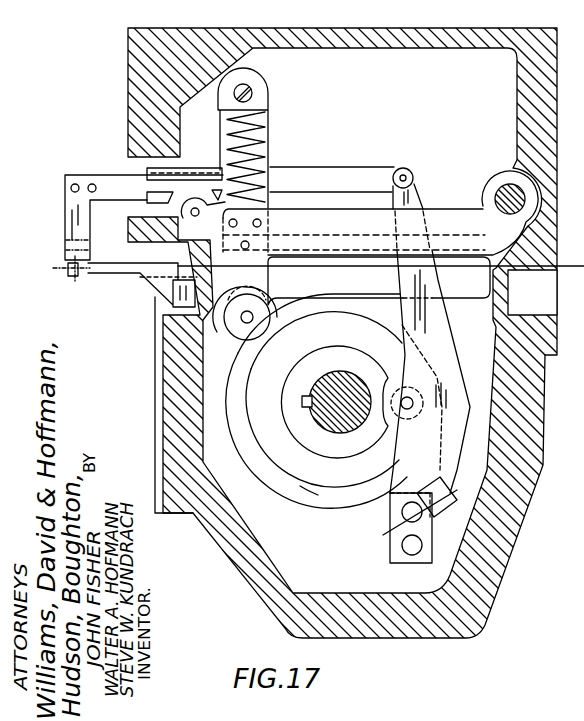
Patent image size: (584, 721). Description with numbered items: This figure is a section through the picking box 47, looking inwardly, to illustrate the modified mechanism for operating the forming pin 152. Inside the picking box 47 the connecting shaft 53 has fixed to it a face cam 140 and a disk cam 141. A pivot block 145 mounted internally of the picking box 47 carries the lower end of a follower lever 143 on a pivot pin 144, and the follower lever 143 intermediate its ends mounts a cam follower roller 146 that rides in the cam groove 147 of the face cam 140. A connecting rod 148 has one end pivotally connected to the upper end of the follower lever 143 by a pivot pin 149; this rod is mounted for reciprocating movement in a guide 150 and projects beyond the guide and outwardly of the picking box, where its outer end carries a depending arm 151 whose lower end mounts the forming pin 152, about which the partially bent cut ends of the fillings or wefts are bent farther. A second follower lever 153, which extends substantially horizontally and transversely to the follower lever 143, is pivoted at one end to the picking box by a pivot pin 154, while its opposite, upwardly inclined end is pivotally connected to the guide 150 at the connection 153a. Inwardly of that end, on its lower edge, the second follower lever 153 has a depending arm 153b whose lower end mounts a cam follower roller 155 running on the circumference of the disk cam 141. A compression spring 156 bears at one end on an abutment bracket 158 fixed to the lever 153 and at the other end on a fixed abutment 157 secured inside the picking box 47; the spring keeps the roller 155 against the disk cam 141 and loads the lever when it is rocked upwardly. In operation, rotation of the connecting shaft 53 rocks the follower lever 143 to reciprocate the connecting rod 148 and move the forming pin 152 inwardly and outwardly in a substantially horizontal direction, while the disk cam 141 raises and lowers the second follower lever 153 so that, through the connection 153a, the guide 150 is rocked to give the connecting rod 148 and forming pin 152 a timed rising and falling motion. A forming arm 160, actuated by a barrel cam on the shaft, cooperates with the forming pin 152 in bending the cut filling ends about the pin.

The picking box 47 is at (512, 542).
The connecting shaft 53 is at (346, 378).
The face cam 140 is at (343, 482).
The disk cam 141 is at (262, 468).
The follower lever 143 is at (424, 200).
The pivot pin 144 is at (400, 517).
The pivot block 145 is at (390, 553).
The cam follower roller 146 is at (438, 380).
The cam groove 147 is at (310, 482).
The connecting rod 148 is at (334, 148).
The pivot pin 149 is at (406, 172).
The guide 150 is at (146, 170).
The depending arm 151 is at (65, 208).
The forming pin 152 is at (67, 266).
The second follower lever 153 is at (349, 234).
The pivotal connection 153a is at (193, 216).
The depending arm 153b is at (272, 276).
The pivot pin 154 is at (503, 214).
The cam follower roller 155 is at (240, 338).
The compression spring 156 is at (268, 131).
The fixed abutment 157 is at (267, 86).
The abutment bracket 158 is at (354, 245).
The forming arm 160 is at (108, 276).